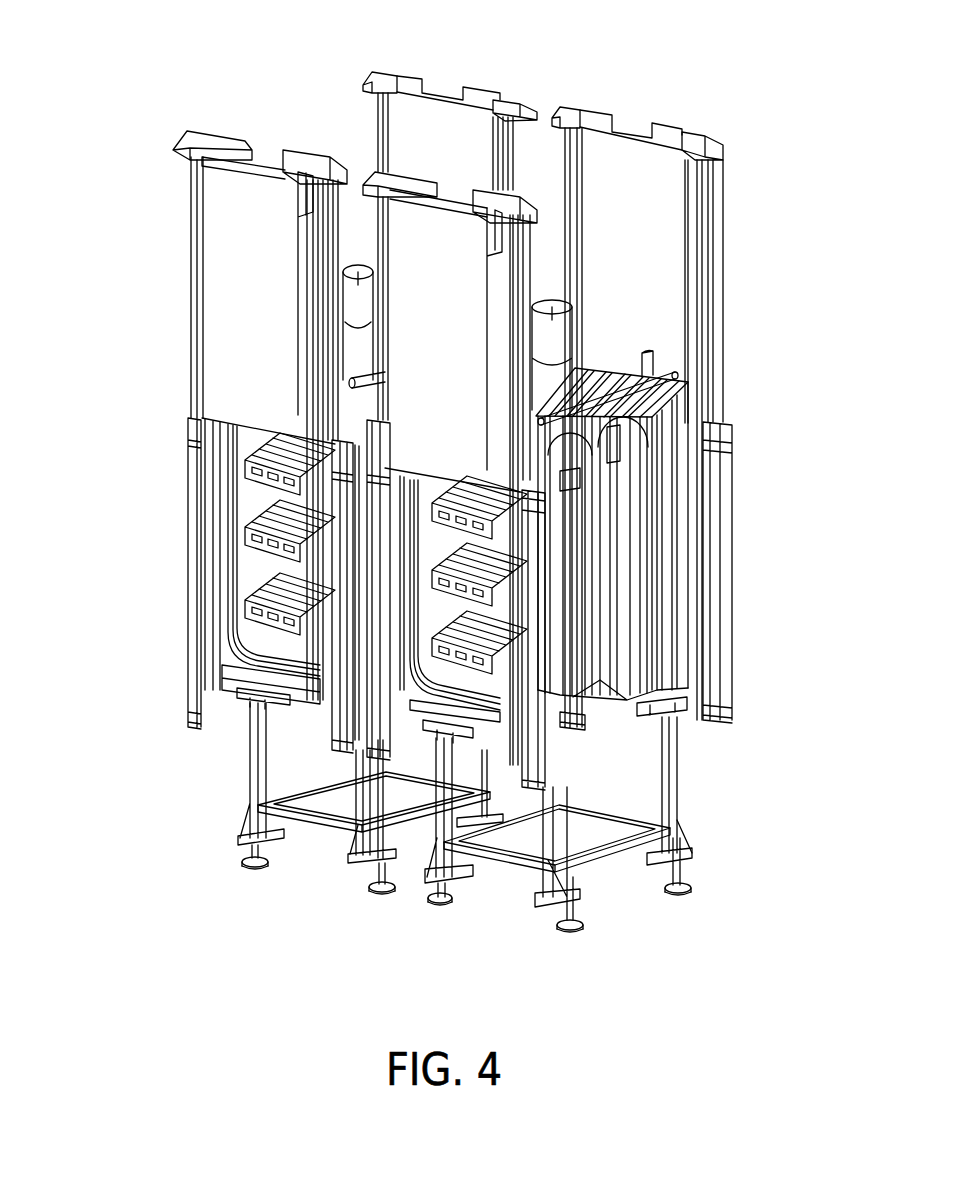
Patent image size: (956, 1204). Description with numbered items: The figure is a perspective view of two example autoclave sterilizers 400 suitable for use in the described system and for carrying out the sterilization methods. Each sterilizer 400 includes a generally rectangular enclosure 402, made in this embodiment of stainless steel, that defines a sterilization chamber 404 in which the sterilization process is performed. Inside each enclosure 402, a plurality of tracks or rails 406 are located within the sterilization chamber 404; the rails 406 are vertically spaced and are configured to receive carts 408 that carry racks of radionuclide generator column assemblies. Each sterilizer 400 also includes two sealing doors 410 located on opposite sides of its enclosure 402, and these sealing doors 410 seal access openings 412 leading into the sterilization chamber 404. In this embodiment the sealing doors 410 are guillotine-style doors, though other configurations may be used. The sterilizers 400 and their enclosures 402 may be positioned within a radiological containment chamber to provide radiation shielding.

The autoclave sterilizer 400 is at (161, 380).
The enclosure 402 is at (633, 620).
The sterilization chamber 404 is at (443, 673).
The rails 406 is at (243, 462).
The cart 408 is at (245, 626).
The sealing door 410 is at (447, 223).
The access opening 412 is at (507, 697).